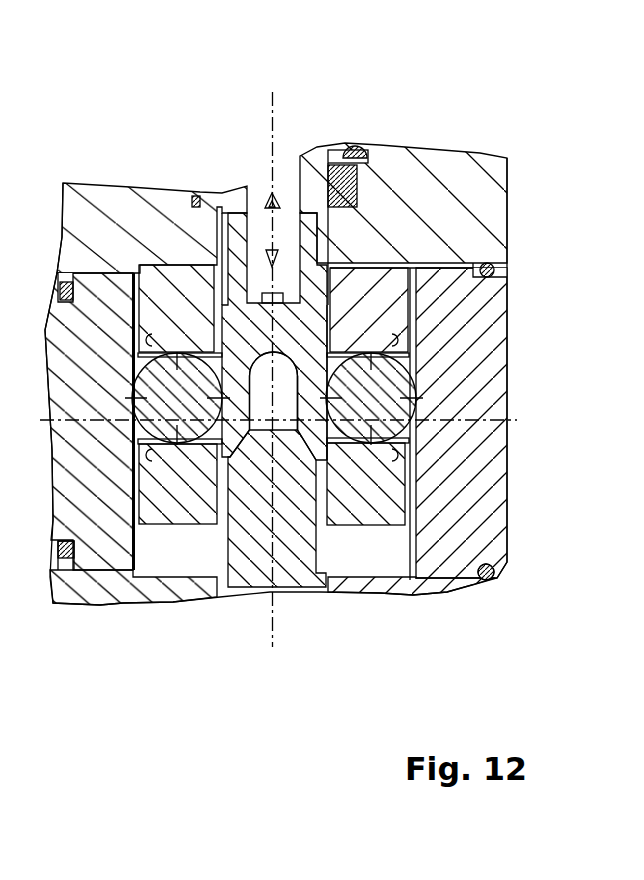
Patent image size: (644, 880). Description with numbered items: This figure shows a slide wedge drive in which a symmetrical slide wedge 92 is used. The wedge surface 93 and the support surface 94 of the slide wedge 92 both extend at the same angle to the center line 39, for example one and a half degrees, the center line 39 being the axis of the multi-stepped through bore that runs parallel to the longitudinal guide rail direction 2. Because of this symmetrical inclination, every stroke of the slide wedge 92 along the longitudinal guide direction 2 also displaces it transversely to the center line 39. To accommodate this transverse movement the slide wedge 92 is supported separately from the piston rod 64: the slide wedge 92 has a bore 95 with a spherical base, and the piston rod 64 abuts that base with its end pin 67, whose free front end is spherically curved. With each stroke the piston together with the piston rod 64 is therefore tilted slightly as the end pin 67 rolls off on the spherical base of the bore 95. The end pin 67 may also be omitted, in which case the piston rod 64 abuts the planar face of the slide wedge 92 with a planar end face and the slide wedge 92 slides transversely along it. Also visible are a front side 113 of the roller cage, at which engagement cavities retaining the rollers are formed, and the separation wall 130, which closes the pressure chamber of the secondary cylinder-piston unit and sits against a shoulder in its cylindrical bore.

The longitudinal guide rail direction 2 is at (272, 198).
The center line 39 is at (273, 138).
The piston rod 64 is at (253, 552).
The end pin 67 is at (281, 382).
The slide wedge 92 is at (307, 323).
The wedge surface 93 is at (180, 467).
The support surface 94 is at (325, 367).
The bore 95 is at (300, 399).
The front side 113 is at (405, 462).
The separation wall 130 is at (355, 497).